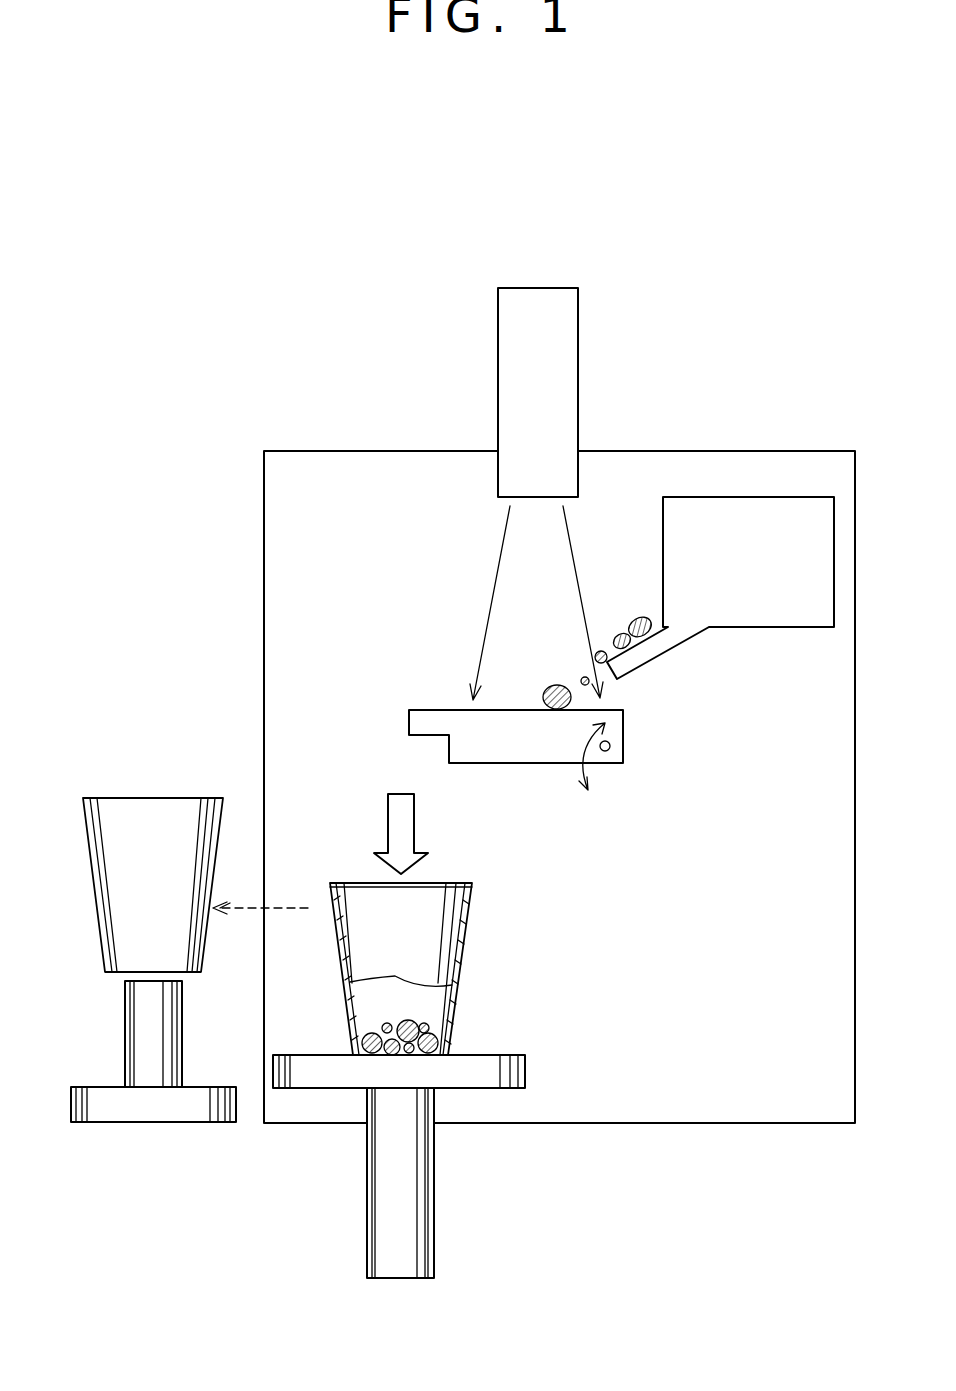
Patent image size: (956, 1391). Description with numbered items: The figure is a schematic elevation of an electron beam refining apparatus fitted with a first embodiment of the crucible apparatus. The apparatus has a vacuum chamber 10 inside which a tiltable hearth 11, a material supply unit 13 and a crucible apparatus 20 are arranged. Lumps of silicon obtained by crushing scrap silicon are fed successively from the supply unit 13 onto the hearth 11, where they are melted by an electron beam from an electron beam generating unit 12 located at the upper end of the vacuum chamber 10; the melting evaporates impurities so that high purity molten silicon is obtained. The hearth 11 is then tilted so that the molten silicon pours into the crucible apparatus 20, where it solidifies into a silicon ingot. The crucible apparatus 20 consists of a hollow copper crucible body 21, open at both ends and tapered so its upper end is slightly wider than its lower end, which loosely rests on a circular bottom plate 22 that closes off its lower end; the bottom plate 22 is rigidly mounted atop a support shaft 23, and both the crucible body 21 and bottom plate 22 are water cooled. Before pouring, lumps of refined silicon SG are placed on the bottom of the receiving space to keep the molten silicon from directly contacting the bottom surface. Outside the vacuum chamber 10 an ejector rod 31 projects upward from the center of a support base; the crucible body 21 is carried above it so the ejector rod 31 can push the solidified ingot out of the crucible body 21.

The vacuum chamber 10 is at (347, 450).
The tiltable hearth 11 is at (431, 718).
The electron beam generating unit 12 is at (510, 377).
The material supply unit 13 is at (771, 627).
The crucible apparatus 20 is at (603, 911).
The crucible body 21 is at (448, 910).
The bottom plate 22 is at (518, 1072).
The support shaft 23 is at (423, 1198).
The lumps of refined silicon SG is at (450, 1025).
The ejector rod 31 is at (135, 1015).